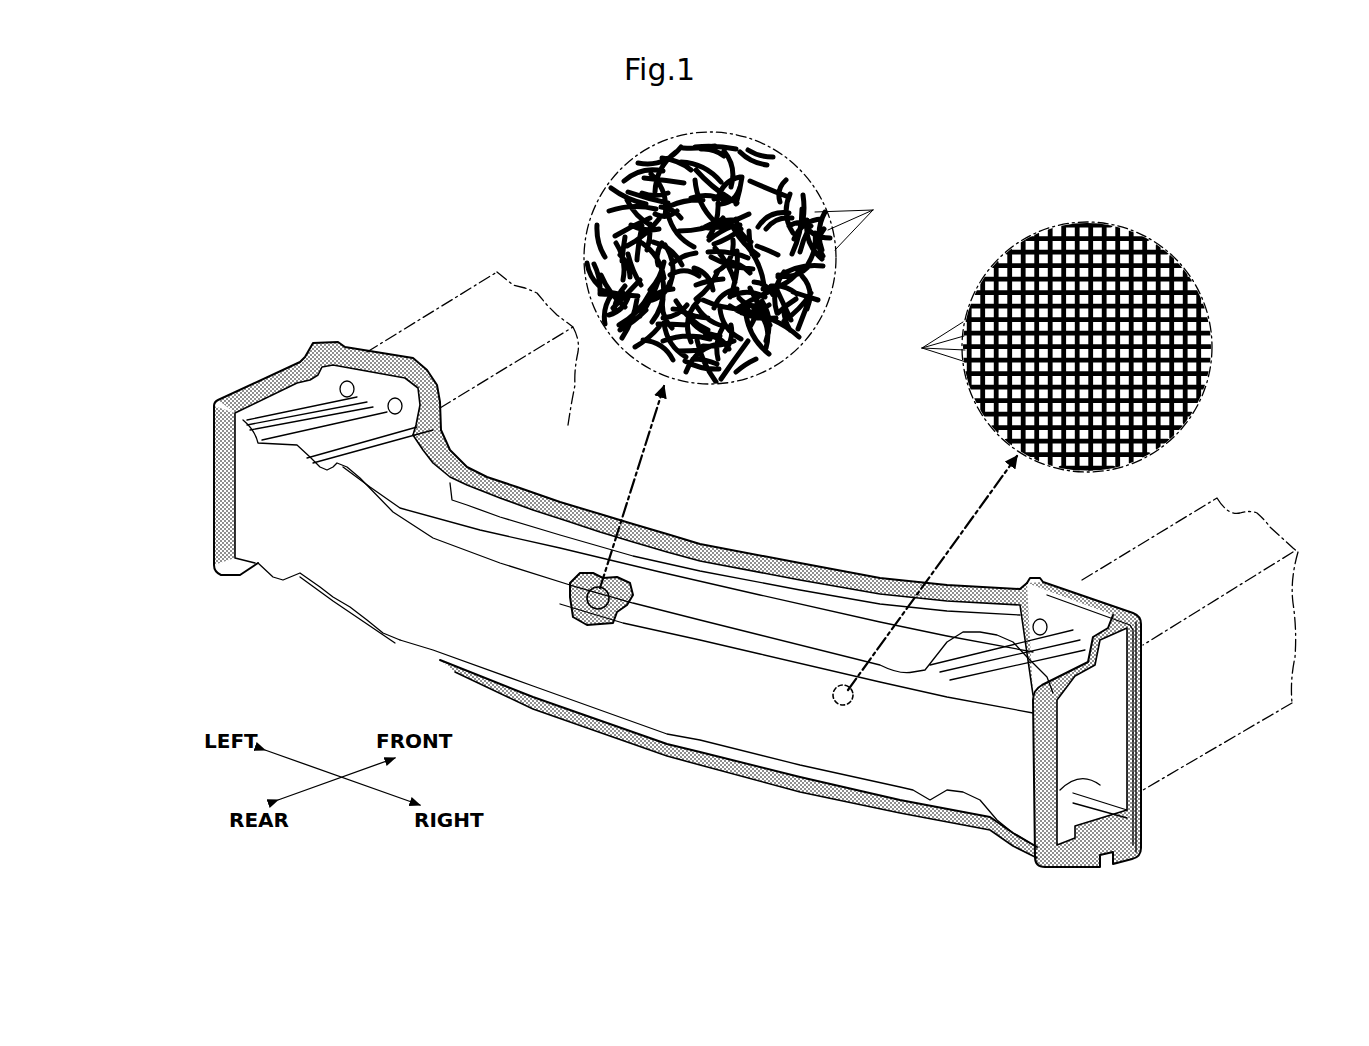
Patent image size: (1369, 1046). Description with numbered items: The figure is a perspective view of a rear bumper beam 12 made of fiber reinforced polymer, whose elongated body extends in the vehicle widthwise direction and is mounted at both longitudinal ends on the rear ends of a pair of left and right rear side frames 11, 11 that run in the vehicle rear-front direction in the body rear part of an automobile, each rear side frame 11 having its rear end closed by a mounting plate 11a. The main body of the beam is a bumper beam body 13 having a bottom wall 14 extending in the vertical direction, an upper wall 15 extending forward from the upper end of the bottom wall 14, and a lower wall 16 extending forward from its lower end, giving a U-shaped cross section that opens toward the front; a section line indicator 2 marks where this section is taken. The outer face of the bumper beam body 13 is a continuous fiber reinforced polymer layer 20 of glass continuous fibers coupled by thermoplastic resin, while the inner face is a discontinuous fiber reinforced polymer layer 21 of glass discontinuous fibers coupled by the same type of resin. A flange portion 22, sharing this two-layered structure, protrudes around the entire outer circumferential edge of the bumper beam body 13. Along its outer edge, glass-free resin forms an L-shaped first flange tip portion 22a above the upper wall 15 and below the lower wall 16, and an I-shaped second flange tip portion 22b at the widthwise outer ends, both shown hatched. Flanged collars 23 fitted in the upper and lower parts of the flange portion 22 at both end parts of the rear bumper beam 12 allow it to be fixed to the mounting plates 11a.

The rear side frame 11 is at (430, 310).
The mounting plate 11a is at (415, 368).
The rear bumper beam 12 is at (610, 774).
The bumper beam body 13 is at (535, 702).
The bottom wall 14 is at (440, 618).
The upper wall 15 is at (567, 553).
The lower wall 16 is at (668, 748).
The continuous fiber reinforced polymer layer 20 is at (1095, 222).
The discontinuous fiber reinforced polymer layer 21 is at (642, 193).
The flange portion 22 is at (650, 604).
The first flange tip portion 22a is at (757, 560).
The second flange tip portion 22b is at (228, 497).
The flanged collar 23 is at (393, 400).
The section line indicator 2 is at (740, 525).